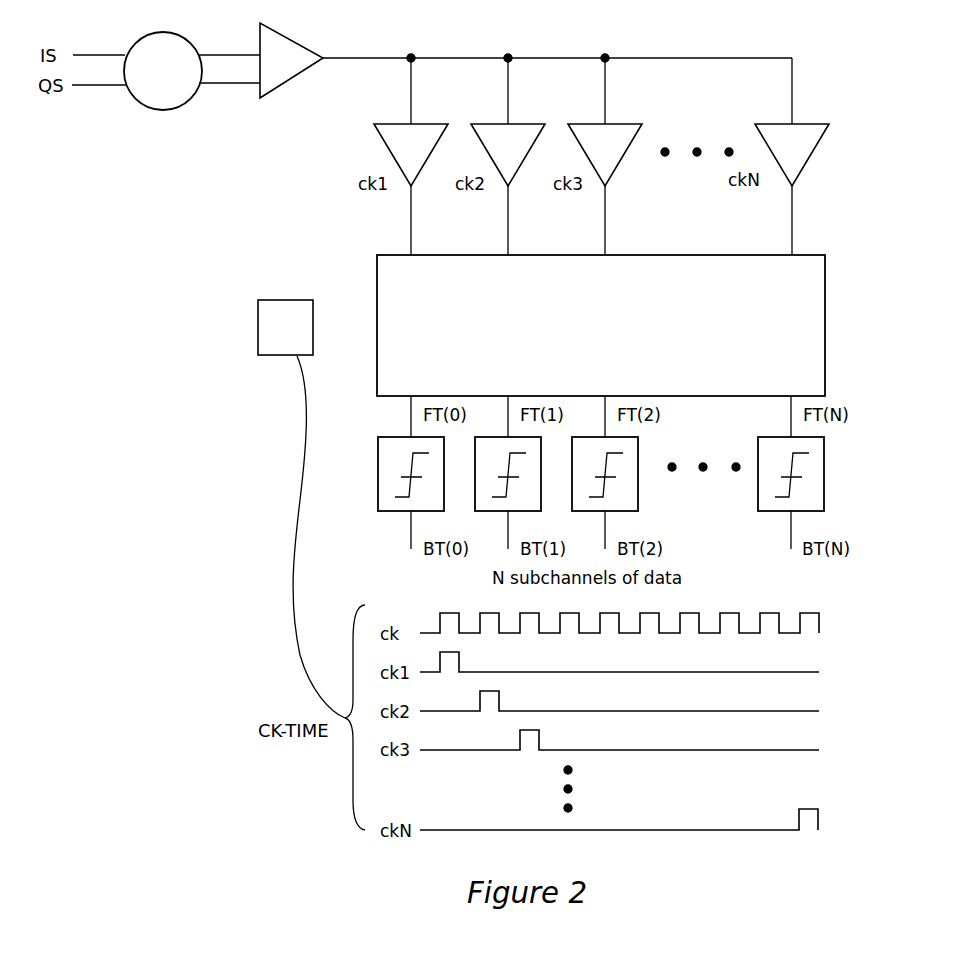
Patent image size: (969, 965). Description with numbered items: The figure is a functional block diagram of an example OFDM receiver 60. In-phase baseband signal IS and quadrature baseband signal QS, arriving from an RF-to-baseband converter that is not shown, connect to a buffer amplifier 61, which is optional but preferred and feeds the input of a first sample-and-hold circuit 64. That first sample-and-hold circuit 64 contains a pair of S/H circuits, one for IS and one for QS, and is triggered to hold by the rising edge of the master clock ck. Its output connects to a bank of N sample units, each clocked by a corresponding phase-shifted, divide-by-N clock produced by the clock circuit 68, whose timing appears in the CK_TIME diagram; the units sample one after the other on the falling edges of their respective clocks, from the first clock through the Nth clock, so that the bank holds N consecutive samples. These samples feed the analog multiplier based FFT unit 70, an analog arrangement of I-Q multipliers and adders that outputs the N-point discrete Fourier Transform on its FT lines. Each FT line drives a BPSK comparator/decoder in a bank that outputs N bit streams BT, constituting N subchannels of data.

The OFDM receiver 60 is at (836, 230).
The buffer amplifier 61 is at (160, 110).
The first sample-and-hold circuit 64 is at (270, 96).
The clock circuit 68 is at (270, 356).
The AMS FFT unit 70 is at (826, 322).